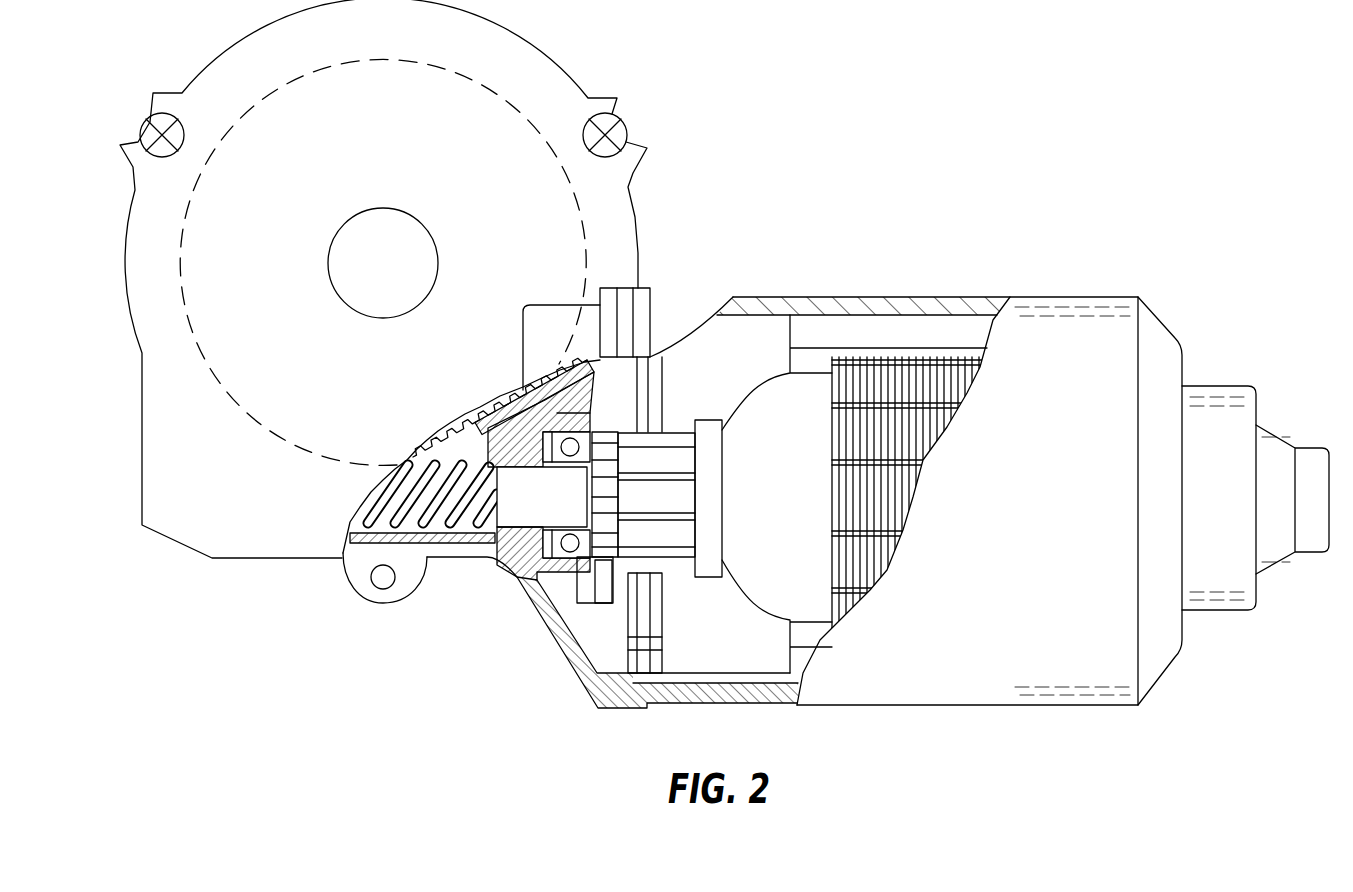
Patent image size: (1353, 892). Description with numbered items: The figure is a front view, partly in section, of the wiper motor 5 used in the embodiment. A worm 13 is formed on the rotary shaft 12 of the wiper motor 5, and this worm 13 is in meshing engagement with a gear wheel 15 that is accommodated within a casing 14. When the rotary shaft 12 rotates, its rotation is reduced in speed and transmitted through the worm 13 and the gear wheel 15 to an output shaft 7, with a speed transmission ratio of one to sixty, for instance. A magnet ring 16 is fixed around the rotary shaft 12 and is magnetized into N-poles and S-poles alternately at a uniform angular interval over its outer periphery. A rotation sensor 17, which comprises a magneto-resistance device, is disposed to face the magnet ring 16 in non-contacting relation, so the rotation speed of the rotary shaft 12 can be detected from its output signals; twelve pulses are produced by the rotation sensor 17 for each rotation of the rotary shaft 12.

The wiper motor 5 is at (1071, 292).
The output shaft 7 is at (330, 245).
The rotary shaft 12 is at (537, 513).
The worm 13 is at (410, 527).
The casing 14 is at (135, 192).
The gear wheel 15 is at (487, 420).
The magnet ring 16 is at (607, 438).
The rotation sensor 17 is at (559, 646).